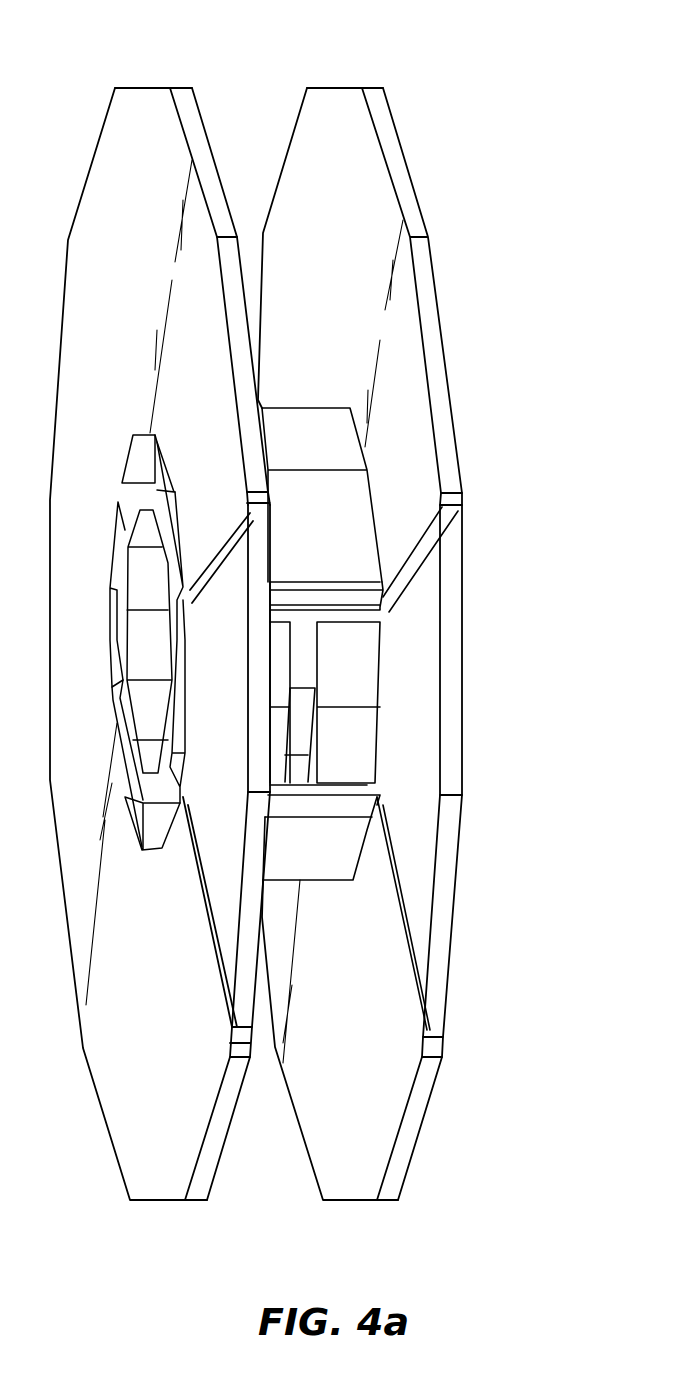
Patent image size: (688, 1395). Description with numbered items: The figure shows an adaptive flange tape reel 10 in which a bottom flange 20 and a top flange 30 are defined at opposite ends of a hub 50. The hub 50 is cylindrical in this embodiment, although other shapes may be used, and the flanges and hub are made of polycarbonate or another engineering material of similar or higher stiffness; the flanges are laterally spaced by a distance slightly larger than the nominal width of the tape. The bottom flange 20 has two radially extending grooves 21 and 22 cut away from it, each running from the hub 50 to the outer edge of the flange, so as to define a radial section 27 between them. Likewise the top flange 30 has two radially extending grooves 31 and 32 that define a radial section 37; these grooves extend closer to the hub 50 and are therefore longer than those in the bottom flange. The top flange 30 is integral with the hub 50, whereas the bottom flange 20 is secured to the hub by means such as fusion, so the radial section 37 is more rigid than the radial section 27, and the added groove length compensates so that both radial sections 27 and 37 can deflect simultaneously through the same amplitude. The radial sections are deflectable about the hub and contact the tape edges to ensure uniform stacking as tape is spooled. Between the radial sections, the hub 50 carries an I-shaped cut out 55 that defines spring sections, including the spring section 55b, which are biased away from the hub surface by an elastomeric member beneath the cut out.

The adaptive flange tape reel 10 is at (281, 72).
The bottom flange 20 is at (149, 245).
The radially extending groove 21 is at (250, 513).
The radially extending groove 22 is at (235, 1035).
The radial section 27 is at (232, 660).
The top flange 30 is at (344, 245).
The radially extending groove 31 is at (464, 510).
The radially extending groove 32 is at (447, 1038).
The radial section 37 is at (433, 705).
The hub 50 is at (336, 533).
The I-shaped cut out 55 is at (300, 735).
The spring section 55b is at (378, 685).